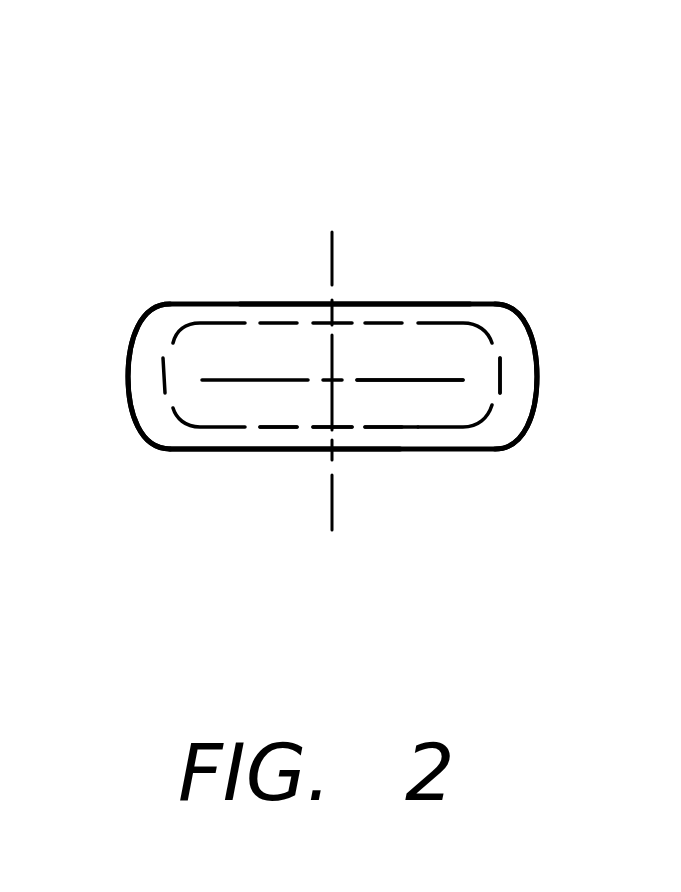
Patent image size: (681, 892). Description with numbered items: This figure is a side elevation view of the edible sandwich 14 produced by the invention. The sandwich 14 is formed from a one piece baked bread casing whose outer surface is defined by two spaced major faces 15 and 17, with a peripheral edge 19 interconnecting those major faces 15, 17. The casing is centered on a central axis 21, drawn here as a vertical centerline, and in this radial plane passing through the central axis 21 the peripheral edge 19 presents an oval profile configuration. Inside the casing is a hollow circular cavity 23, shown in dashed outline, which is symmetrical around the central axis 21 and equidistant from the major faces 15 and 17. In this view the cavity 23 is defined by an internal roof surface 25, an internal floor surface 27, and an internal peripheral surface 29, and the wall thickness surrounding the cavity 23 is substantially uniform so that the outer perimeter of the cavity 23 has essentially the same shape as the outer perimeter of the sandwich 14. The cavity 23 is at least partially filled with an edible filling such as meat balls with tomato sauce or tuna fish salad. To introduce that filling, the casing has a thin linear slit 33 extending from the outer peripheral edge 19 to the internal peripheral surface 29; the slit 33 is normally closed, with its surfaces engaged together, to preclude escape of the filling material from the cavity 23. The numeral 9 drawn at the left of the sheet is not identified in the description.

The pillow 9 is at (271, 356).
The edible sandwich 14 is at (518, 403).
The major face 15 is at (405, 304).
The major face 17 is at (177, 452).
The peripheral edge 19 is at (127, 377).
The central axis 21 is at (330, 523).
The hollow circular cavity 23 is at (278, 350).
The internal roof surface 25 is at (294, 323).
The internal floor surface 27 is at (387, 428).
The internal peripheral surface 29 is at (502, 387).
The thin linear slit 33 is at (437, 373).